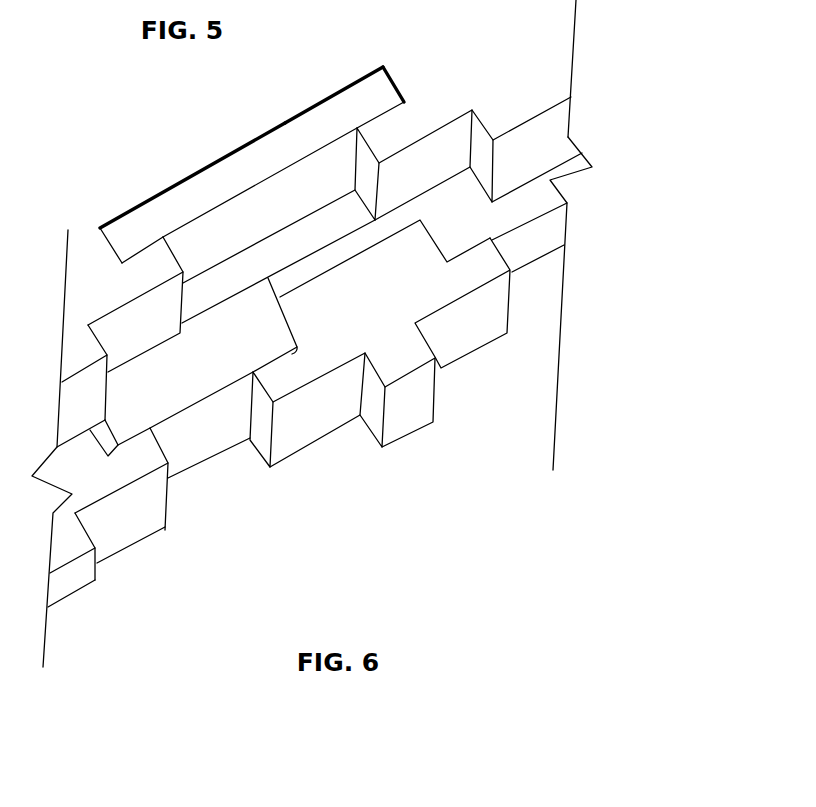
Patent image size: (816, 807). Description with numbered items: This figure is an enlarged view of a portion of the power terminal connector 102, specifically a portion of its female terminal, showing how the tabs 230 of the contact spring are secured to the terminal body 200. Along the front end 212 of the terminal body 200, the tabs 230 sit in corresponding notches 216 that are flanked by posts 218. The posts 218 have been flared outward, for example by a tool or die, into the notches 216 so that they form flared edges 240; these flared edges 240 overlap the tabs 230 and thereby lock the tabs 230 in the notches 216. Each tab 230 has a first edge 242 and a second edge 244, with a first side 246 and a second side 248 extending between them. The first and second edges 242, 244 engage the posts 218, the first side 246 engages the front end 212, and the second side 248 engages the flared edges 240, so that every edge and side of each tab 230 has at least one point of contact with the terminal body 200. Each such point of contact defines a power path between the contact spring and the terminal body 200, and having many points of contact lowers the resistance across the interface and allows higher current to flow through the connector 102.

The power terminal connector 102 is at (590, 55).
The terminal body 200 is at (545, 40).
The front end 212 is at (348, 86).
The notches 216 is at (212, 486).
The posts 218 is at (413, 420).
The tabs 230 is at (240, 172).
The flared edges 240 is at (152, 267).
The first edge 242 is at (100, 237).
The second edge 244 is at (397, 90).
The first side 246 is at (285, 121).
The second side 248 is at (309, 173).